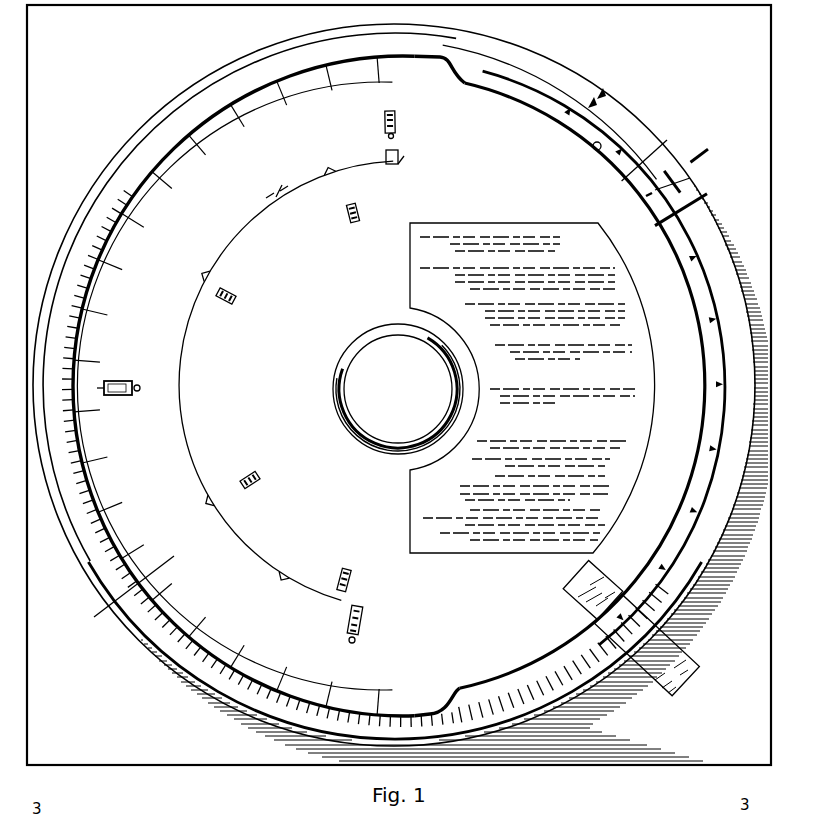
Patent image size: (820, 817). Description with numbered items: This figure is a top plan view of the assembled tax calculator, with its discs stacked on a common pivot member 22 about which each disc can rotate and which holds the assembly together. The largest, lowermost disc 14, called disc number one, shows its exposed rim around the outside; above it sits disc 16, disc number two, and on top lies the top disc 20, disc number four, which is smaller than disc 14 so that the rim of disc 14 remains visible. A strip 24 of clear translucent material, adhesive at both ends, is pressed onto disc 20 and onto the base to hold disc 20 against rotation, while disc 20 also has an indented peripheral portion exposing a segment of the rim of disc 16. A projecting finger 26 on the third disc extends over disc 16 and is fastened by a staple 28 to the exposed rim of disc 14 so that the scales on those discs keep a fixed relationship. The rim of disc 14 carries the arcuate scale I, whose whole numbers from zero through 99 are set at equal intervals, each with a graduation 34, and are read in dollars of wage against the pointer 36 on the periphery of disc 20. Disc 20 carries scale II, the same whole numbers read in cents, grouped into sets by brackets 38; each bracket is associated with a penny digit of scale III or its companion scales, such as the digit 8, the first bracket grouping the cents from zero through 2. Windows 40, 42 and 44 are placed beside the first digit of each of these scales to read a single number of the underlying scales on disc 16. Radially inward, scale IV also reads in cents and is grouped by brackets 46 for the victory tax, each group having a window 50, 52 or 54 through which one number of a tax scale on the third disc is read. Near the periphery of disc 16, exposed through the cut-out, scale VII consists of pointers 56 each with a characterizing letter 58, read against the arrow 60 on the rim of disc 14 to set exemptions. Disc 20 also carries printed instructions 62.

The lower disc 14 is at (214, 90).
The disc No. 2 16 is at (483, 83).
The top disc 20 is at (643, 548).
The common pivot member 22 is at (398, 389).
The strip of clear translucent material 24 is at (592, 147).
The projecting finger 26 is at (667, 190).
The staple 28 is at (705, 165).
The graduation 34 is at (127, 192).
The pointer 36 is at (75, 392).
The brackets 38 is at (178, 661).
The window 40 is at (395, 110).
The window 42 is at (112, 385).
The window 44 is at (356, 606).
The brackets 46 is at (258, 222).
The window 50 is at (232, 292).
The window 52 is at (256, 472).
The window 54 is at (342, 569).
The pointers 56 is at (708, 378).
The characterizing symbol 58 is at (685, 262).
The arrow 60 is at (604, 96).
The instructions 62 is at (578, 223).
The pointer 99 is at (373, 611).
The tab 8 is at (395, 157).
The section line 2 is at (93, 612).
The scale I is at (92, 212).
The scale II is at (404, 62).
The scale III is at (404, 132).
The scale IV is at (405, 143).
The scale VII is at (558, 115).